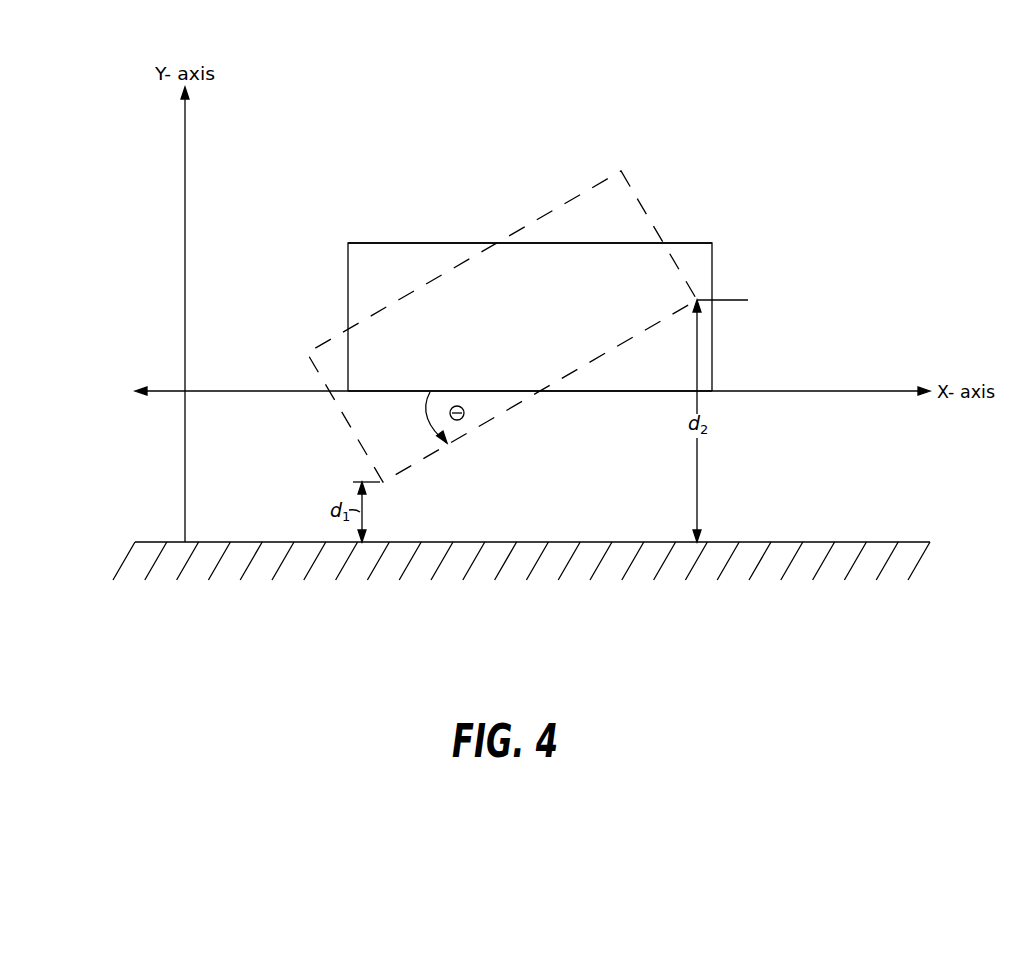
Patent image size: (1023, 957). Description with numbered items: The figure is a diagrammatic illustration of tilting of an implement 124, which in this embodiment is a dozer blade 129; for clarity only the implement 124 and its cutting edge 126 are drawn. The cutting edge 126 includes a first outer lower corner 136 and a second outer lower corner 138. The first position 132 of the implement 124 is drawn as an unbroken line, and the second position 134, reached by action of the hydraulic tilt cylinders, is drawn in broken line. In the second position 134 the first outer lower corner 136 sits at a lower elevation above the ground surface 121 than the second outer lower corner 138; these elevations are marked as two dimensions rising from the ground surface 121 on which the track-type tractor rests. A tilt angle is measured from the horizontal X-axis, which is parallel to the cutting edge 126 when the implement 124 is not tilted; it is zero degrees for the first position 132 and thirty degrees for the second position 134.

The ground surface 121 is at (897, 564).
The implement 124 is at (577, 292).
The dozer blade 129 is at (695, 241).
The cutting edge 126 is at (642, 390).
The first position 132 is at (450, 240).
The second position 134 is at (385, 304).
The first outer lower corner 136 is at (351, 391).
The second outer lower corner 138 is at (697, 300).